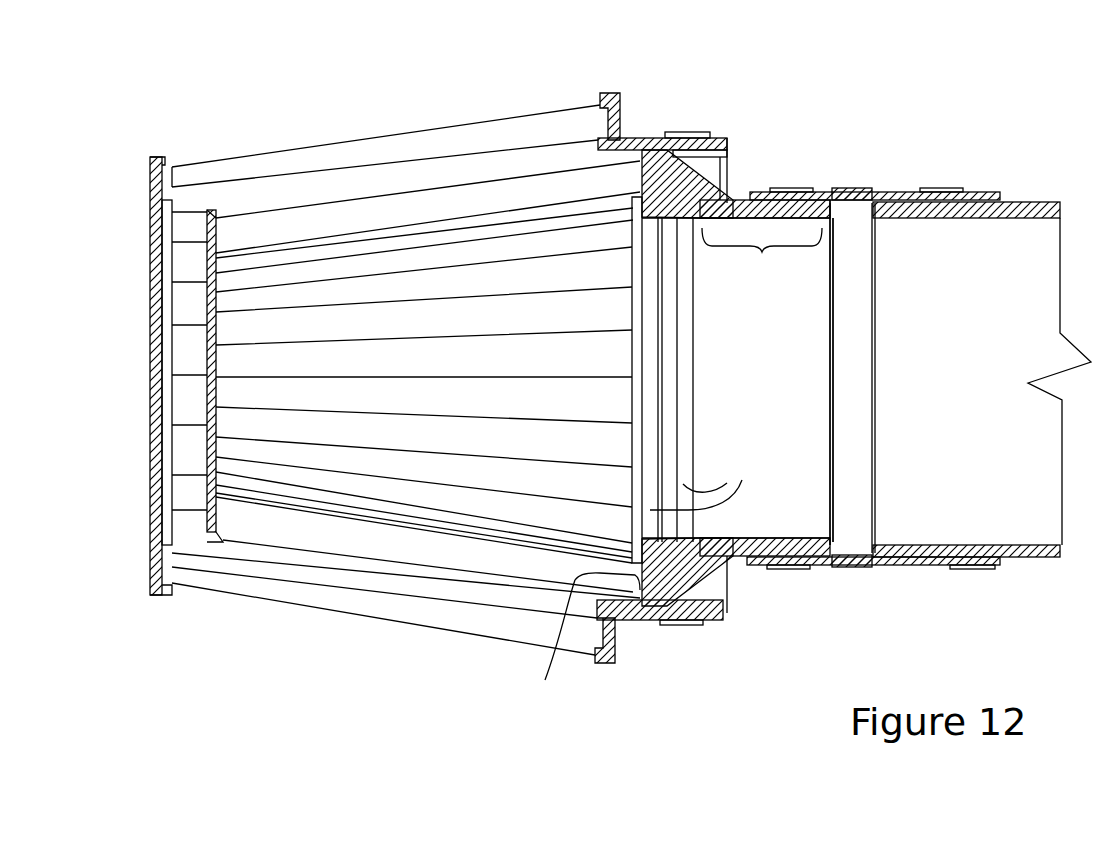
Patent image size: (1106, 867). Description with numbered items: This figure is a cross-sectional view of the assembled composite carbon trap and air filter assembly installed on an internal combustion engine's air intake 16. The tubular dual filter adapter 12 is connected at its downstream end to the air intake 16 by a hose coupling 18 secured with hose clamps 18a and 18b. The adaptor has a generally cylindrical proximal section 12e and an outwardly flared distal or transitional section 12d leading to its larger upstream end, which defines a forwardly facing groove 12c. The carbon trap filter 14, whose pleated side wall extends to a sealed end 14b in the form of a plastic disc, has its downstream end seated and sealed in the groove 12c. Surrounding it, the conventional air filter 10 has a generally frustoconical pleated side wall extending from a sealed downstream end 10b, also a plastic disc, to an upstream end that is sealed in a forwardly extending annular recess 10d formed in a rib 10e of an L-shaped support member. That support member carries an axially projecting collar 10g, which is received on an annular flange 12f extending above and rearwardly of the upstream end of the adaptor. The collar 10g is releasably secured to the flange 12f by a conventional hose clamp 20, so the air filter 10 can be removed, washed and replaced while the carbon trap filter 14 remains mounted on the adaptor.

The air filter 10 is at (260, 106).
The sealed downstream end 10b is at (152, 163).
The forwardly extending annular recess 10d is at (600, 103).
The rib 10e is at (617, 657).
The axially projecting collar 10g is at (637, 137).
The dual filter adapter 12 is at (740, 583).
The forwardly facing groove 12c is at (577, 641).
The outwardly flared distal section 12d is at (706, 481).
The cylindrical proximal section 12e is at (762, 259).
The annular flange 12f is at (737, 152).
The carbon trap filter 14 is at (397, 258).
The sealed end 14b is at (210, 200).
The air intake 16 is at (1027, 202).
The hose coupling 18 is at (850, 188).
The hose clamp 18a is at (945, 190).
The hose clamp 18b is at (783, 190).
The hose clamp 20 is at (692, 130).